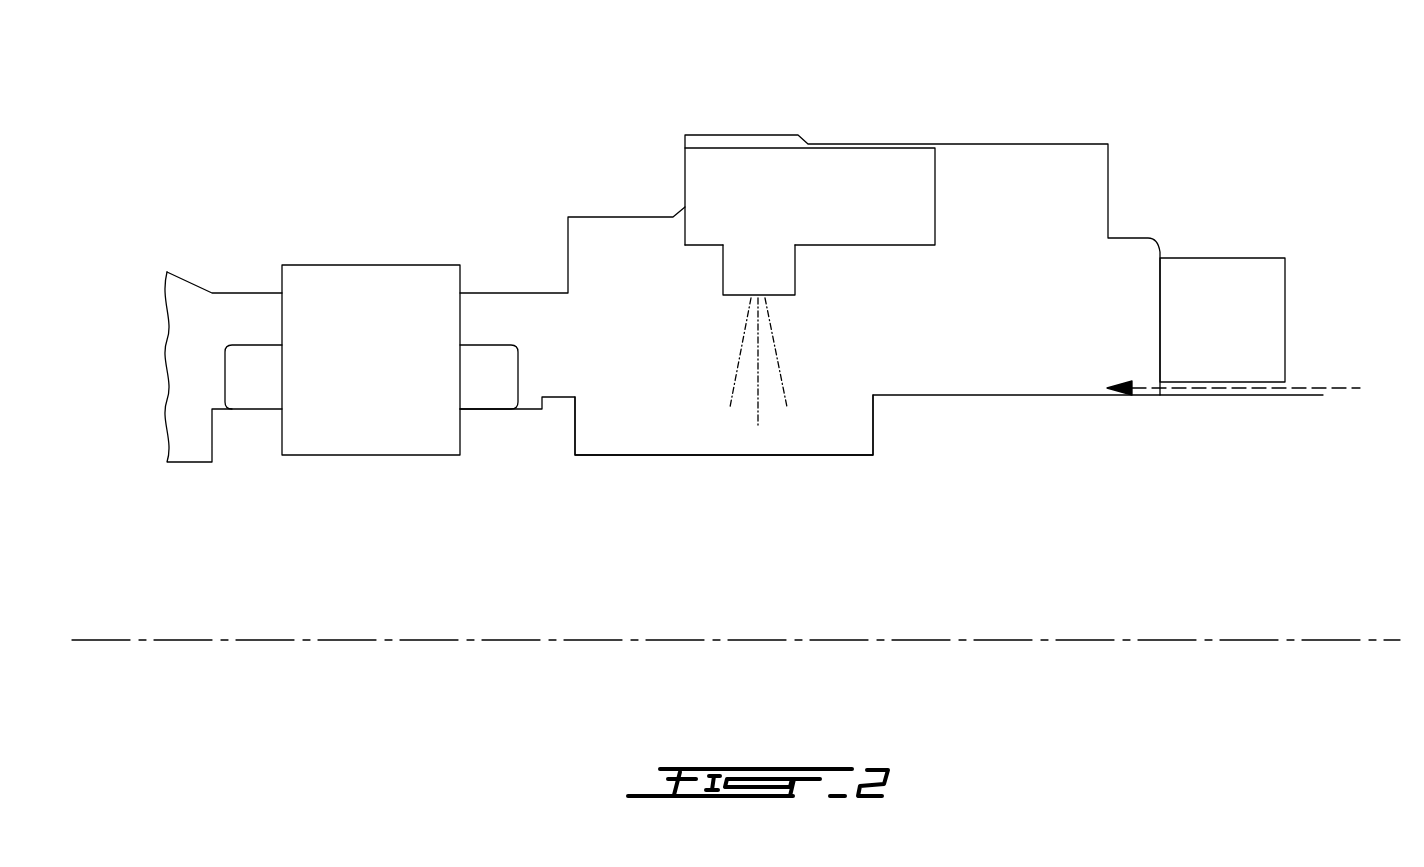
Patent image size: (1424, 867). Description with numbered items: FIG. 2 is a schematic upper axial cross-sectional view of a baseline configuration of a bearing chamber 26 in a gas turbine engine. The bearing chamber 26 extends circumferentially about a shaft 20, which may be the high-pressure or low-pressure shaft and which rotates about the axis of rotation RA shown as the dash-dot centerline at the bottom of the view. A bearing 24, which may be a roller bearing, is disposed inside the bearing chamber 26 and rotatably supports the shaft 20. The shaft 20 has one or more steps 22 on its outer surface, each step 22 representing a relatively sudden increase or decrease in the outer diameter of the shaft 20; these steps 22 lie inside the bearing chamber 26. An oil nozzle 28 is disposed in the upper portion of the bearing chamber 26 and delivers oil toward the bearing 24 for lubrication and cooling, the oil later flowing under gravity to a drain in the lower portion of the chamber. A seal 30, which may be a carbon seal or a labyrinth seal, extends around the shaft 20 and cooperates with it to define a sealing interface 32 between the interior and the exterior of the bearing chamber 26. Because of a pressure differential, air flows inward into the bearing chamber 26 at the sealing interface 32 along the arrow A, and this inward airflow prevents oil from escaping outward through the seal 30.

The shaft 20 is at (983, 396).
The step 22 is at (872, 423).
The bearing 24 is at (363, 305).
The bearing chamber 26 is at (1012, 187).
The oil nozzle 28 is at (757, 270).
The seal 30 is at (1231, 298).
The sealing interface 32 is at (1297, 370).
The arrow A is at (1173, 397).
The axis of rotation RA is at (1232, 641).